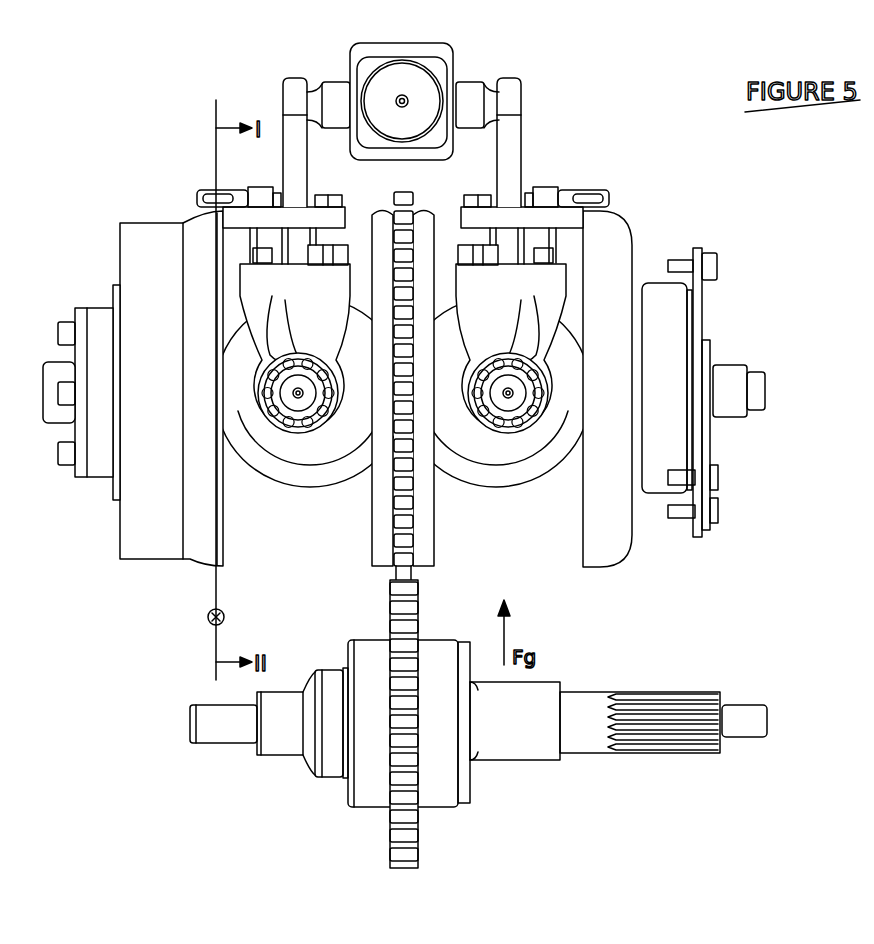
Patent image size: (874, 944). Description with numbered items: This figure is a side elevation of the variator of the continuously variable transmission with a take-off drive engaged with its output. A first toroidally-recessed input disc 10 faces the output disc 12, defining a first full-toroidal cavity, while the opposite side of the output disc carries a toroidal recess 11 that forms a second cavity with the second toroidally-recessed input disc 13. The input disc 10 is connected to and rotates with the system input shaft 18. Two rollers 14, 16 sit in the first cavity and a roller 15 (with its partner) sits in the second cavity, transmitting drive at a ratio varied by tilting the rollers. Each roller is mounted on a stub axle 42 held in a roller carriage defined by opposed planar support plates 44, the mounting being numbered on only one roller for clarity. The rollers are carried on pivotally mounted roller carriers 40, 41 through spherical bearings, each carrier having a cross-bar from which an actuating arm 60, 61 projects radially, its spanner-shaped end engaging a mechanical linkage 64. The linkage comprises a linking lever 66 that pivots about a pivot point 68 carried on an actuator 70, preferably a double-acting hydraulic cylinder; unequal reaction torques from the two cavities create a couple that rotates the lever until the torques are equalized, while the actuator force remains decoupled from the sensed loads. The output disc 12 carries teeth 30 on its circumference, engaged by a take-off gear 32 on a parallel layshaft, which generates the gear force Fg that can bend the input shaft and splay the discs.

The first toroidally-recessed input disc 10 is at (226, 550).
The toroidal recess 11 is at (436, 545).
The output disc 12 is at (372, 545).
The second toroidally-recessed input disc 13 is at (582, 542).
The roller 14 is at (292, 470).
The roller 15 is at (526, 478).
The roller 16 is at (338, 431).
The system input shaft 18 is at (727, 365).
The teeth 30 is at (405, 505).
The gear 32 is at (405, 852).
The roller carrier 40 is at (290, 138).
The roller carrier 41 is at (510, 154).
The stub axle 42 is at (298, 393).
The planar support plate 44 is at (312, 334).
The actuating arm 60 is at (295, 104).
The actuating arm 61 is at (509, 104).
The mechanical linkage 64 is at (472, 90).
The linking lever 66 is at (477, 105).
The pivot point 68 is at (408, 44).
The actuator 70 is at (402, 101).